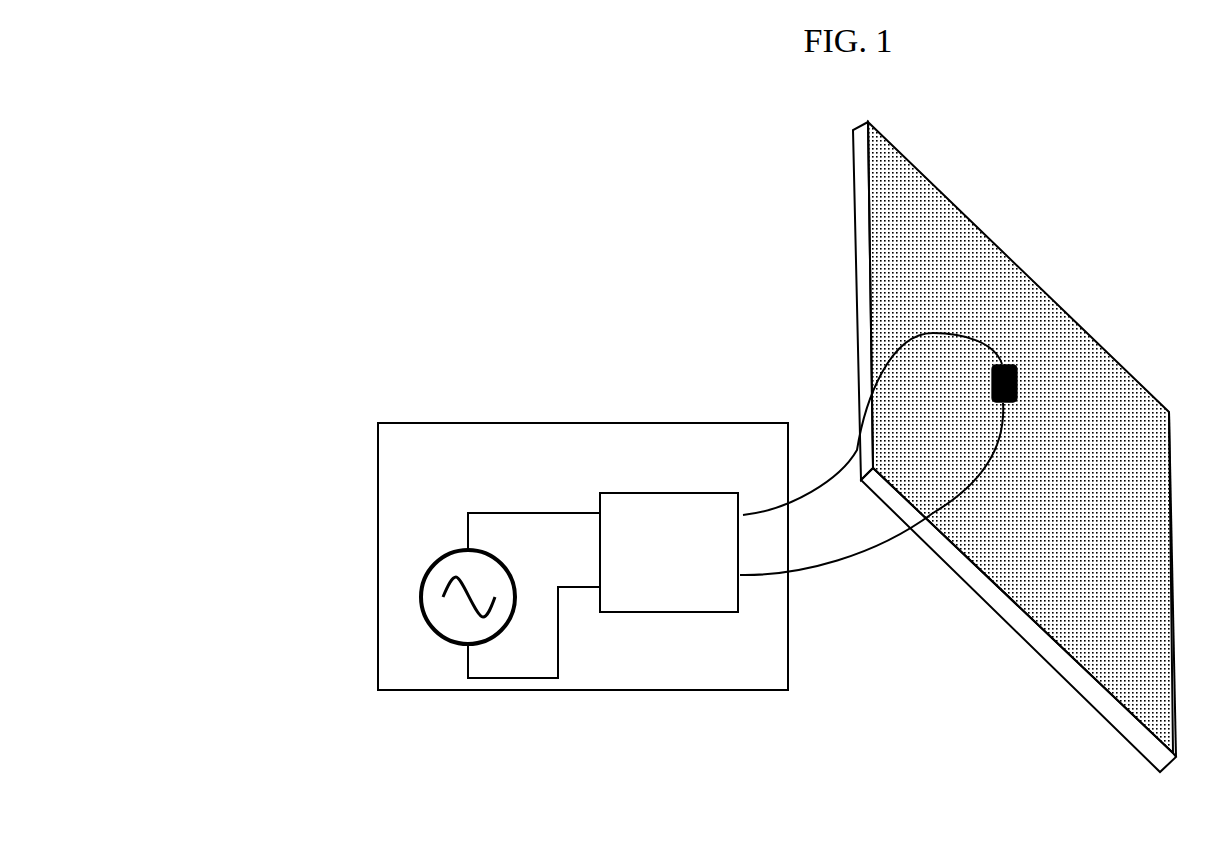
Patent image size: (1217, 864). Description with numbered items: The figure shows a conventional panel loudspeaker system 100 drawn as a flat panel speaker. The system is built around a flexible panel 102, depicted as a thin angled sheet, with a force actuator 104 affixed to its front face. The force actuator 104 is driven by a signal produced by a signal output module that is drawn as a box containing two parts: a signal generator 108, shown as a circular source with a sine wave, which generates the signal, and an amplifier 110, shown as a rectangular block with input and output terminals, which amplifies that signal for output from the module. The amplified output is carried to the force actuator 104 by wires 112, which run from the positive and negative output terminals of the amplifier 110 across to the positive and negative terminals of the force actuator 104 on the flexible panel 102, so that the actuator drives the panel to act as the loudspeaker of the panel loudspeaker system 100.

The panel loudspeaker system 100 is at (716, 462).
The flexible panel 102 is at (861, 127).
The force actuator 104 is at (1022, 366).
The signal generator 108 is at (522, 556).
The amplifier 110 is at (660, 592).
The wires 112 is at (821, 581).